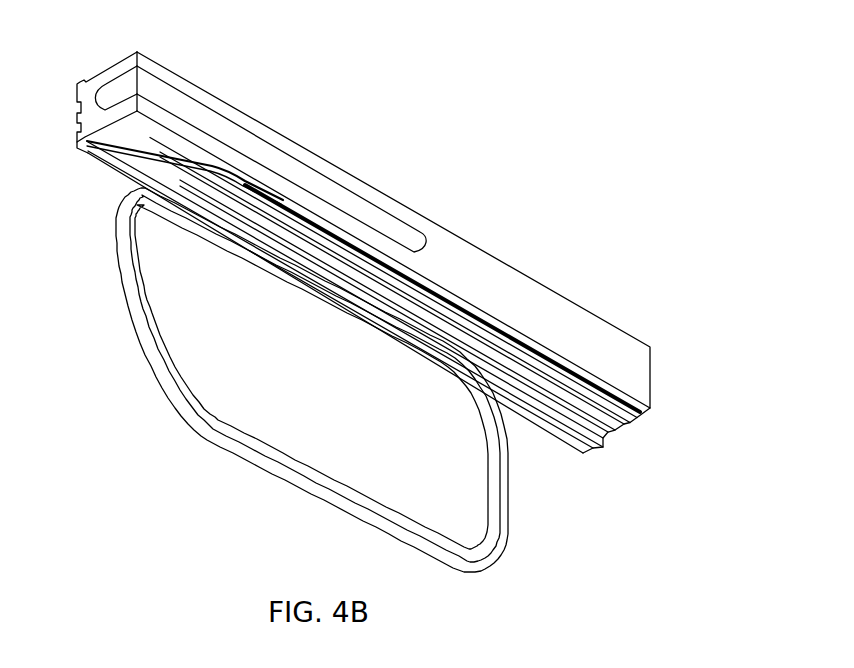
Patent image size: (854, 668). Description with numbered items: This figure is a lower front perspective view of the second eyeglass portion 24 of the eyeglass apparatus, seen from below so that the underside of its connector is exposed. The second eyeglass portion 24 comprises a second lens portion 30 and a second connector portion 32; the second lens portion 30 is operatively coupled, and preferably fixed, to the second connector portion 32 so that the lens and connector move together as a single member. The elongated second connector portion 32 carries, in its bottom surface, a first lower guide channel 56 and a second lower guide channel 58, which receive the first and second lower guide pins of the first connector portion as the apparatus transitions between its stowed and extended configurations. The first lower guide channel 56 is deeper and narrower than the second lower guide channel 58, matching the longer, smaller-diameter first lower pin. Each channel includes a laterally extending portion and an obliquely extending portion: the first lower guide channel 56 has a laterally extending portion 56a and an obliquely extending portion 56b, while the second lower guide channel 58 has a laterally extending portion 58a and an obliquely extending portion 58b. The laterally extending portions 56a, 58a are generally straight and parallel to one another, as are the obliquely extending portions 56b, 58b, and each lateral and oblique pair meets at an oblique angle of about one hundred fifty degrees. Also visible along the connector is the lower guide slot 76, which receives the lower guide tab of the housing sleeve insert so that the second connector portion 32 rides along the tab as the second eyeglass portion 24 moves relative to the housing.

The second eyeglass portion 24 is at (443, 158).
The second lens portion 30 is at (293, 485).
The second connector portion 32 is at (590, 312).
The first lower guide channel 56 is at (435, 290).
The laterally extending portion 56a is at (468, 307).
The obliquely extending portion 56b is at (280, 200).
The second lower guide channel 58 is at (225, 177).
The laterally extending portion 58a is at (255, 182).
The obliquely extending portion 58b is at (148, 153).
The lower guide slot 76 is at (581, 452).